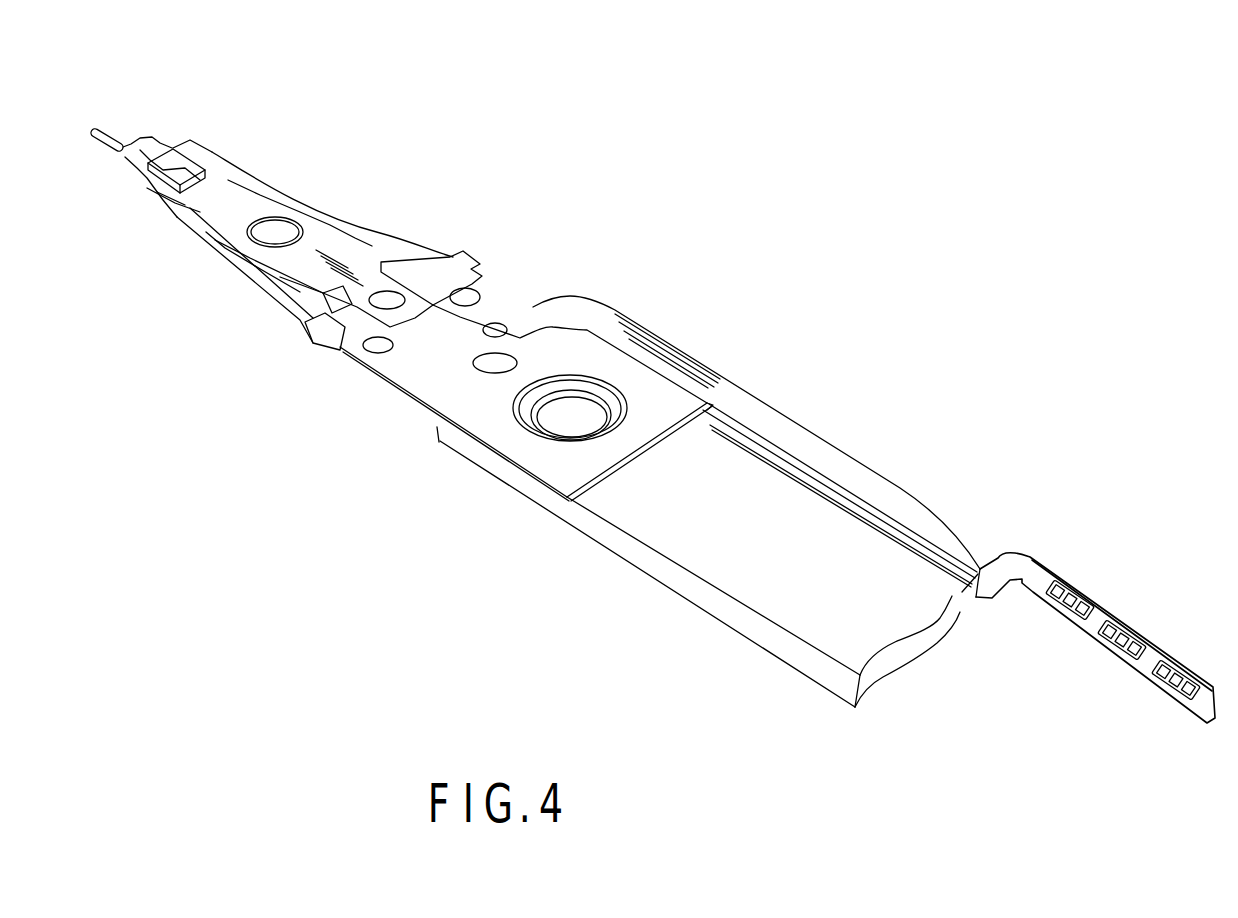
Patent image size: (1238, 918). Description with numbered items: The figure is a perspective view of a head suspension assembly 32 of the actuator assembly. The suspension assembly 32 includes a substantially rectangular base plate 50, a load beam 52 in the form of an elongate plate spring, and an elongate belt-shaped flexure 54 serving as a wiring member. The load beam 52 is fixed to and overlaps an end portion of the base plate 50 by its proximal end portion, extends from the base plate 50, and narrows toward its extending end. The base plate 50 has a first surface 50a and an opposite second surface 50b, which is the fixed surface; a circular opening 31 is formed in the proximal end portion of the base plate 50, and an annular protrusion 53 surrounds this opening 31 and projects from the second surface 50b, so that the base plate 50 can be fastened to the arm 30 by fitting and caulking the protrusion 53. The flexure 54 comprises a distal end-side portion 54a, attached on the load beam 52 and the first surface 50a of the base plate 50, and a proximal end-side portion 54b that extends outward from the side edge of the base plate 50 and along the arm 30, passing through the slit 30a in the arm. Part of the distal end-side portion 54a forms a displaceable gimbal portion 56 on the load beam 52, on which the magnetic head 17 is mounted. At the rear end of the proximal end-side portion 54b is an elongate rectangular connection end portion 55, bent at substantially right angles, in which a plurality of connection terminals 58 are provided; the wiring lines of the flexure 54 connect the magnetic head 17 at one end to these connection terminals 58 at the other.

The magnetic head 17 is at (186, 162).
The arm 30 is at (753, 580).
The slit 30a is at (967, 597).
The boss hole 31 is at (553, 420).
The suspension assembly 32 is at (525, 266).
The base plate 50 is at (487, 410).
The first surface 50a is at (643, 430).
The second surface 50b is at (597, 490).
The load beam 52 is at (372, 245).
The annular protrusion 53 is at (610, 422).
The flexure 54 is at (723, 377).
The distal end-side portion 54a is at (362, 310).
The proximal end-side portion 54b is at (900, 490).
The connection end portion 55 is at (1100, 593).
The gimbal portion 56 is at (205, 226).
The connection terminals 58 is at (1080, 613).